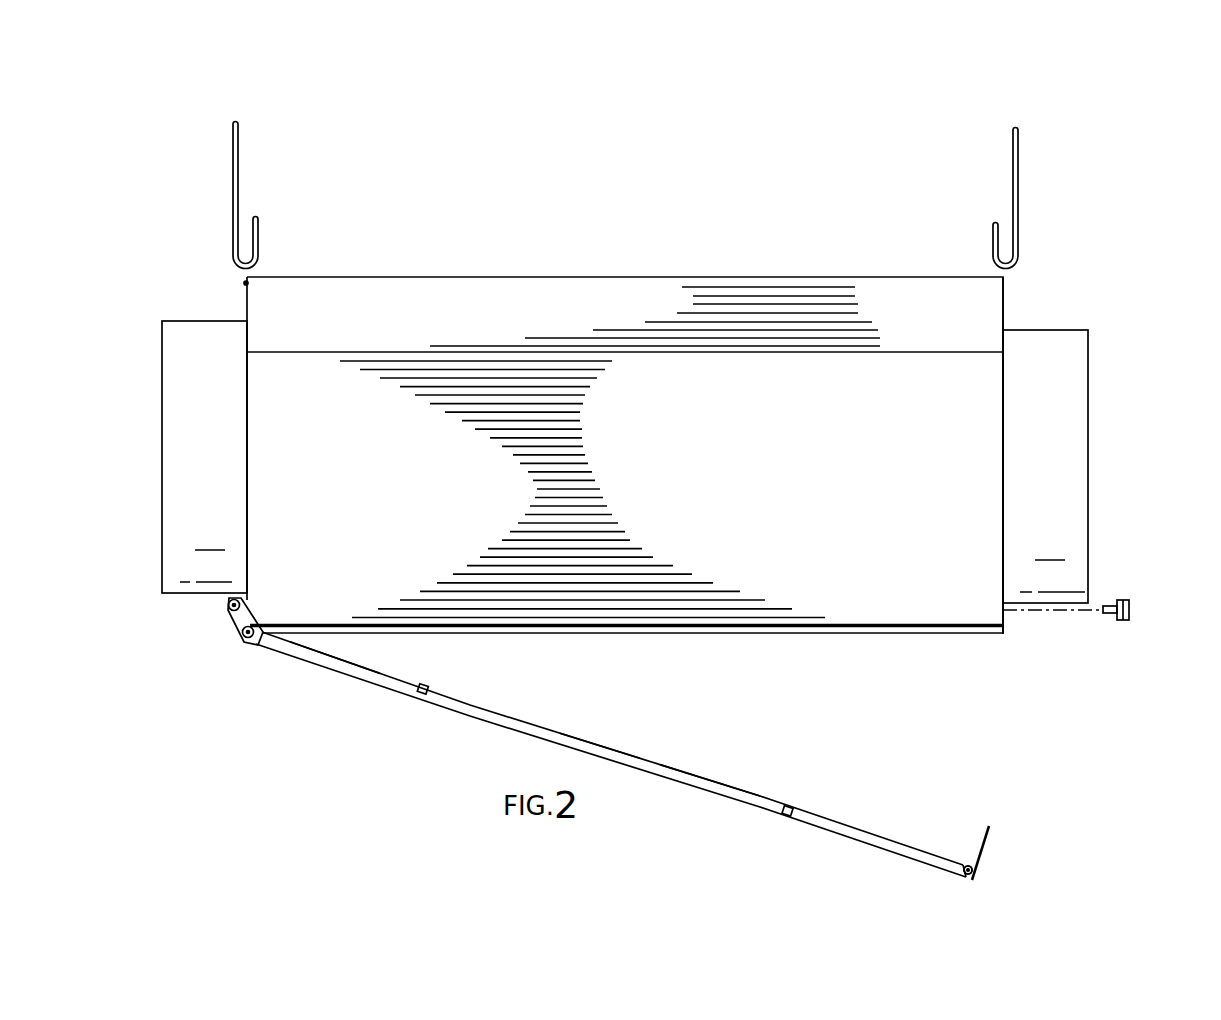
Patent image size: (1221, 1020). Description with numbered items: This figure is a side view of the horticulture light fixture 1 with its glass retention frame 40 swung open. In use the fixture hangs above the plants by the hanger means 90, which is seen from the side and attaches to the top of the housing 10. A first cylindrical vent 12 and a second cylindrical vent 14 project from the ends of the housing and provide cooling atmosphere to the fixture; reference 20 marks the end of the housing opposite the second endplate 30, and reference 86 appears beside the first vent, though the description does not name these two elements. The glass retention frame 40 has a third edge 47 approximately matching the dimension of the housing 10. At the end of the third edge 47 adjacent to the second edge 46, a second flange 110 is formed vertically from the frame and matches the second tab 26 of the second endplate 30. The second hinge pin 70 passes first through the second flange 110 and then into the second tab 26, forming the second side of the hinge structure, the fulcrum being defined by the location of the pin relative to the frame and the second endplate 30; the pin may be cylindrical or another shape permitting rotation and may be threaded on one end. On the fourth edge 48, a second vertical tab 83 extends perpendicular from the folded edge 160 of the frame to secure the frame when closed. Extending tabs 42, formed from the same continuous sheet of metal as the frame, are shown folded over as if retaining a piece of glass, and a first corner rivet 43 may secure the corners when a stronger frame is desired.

The horticulture light fixture 1 is at (214, 170).
The housing 10 is at (750, 490).
The first cylindrical vent 12 is at (1082, 588).
The second cylindrical vent 14 is at (181, 332).
The first end of gate 20 is at (245, 298).
The second tab 26 is at (256, 597).
The second endplate 30 is at (1008, 312).
The glass retention frame 40 is at (677, 766).
The extending tabs 42 is at (420, 698).
The first corner rivet 43 is at (249, 642).
The second edge 46 is at (228, 608).
The third edge 47 is at (624, 764).
The fourth edge 48 is at (982, 874).
The second hinge pin 70 is at (235, 614).
The second vertical tab 83 is at (997, 838).
The locking pin 86 is at (1140, 607).
The hanger means 90 is at (990, 268).
The second flange 110 is at (242, 622).
The folded edge 160 is at (383, 689).